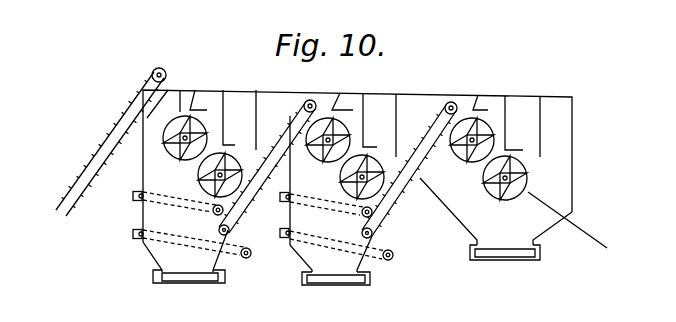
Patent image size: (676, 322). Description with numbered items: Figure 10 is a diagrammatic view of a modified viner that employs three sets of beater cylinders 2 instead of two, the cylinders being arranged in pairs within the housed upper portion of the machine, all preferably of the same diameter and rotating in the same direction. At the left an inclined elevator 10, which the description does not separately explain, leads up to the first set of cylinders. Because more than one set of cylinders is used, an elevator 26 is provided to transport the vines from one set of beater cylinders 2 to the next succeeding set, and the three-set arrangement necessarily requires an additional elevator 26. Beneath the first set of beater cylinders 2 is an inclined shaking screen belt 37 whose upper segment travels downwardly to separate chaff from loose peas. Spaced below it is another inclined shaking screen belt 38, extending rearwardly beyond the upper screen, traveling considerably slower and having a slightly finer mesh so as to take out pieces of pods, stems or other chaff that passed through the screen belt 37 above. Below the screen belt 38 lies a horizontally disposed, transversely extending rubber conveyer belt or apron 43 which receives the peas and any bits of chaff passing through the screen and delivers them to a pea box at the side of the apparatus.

The feed conveyor 10 is at (99, 148).
The elevator 26 is at (300, 118).
The beater cylinders 2 is at (203, 182).
The inclined shaking screen belt 37 is at (178, 203).
The inclined shaking screen belt 38 is at (160, 238).
The conveyer belt or apron 43 is at (193, 281).